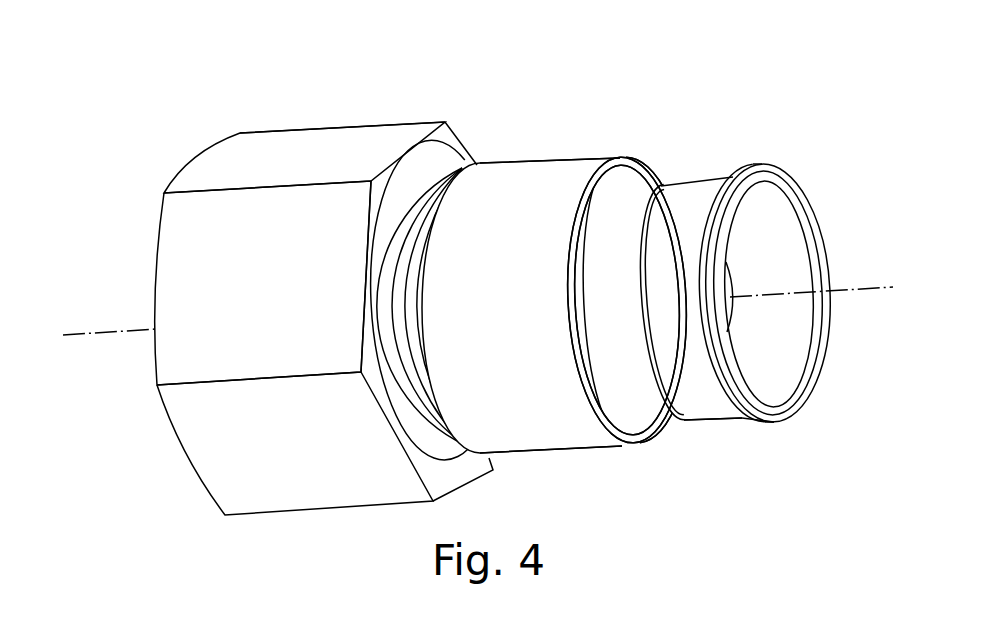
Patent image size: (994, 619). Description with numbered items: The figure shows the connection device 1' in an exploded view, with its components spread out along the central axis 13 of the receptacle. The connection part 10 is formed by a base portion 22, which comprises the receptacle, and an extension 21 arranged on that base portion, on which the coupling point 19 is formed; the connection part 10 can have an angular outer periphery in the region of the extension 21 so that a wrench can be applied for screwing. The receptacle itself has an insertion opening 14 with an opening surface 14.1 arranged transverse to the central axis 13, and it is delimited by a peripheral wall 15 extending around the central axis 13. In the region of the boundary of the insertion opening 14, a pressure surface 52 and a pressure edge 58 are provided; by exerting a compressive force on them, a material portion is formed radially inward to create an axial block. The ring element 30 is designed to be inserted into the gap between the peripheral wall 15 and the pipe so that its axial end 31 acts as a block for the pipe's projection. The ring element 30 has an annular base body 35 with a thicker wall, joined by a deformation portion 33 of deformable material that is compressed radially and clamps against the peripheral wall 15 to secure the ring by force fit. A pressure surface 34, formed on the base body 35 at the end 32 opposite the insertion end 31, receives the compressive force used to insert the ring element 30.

The connection device 1' is at (338, 76).
The connection part 10 is at (481, 162).
The central axis 13 is at (878, 283).
The insertion opening 14 is at (639, 162).
The opening surface 14.1 is at (650, 434).
The peripheral wall 15 is at (605, 242).
The coupling point 19 is at (148, 290).
The extension 21 is at (183, 236).
The base portion 22 is at (527, 180).
The ring element 30 is at (754, 163).
The axial end 31 is at (669, 175).
The end 32 is at (804, 174).
The deformation portion 33 is at (685, 398).
The pressure surface 34 is at (803, 388).
The base body 35 is at (747, 420).
The pressure surface 52 is at (582, 454).
The pressure edge 58 is at (574, 345).